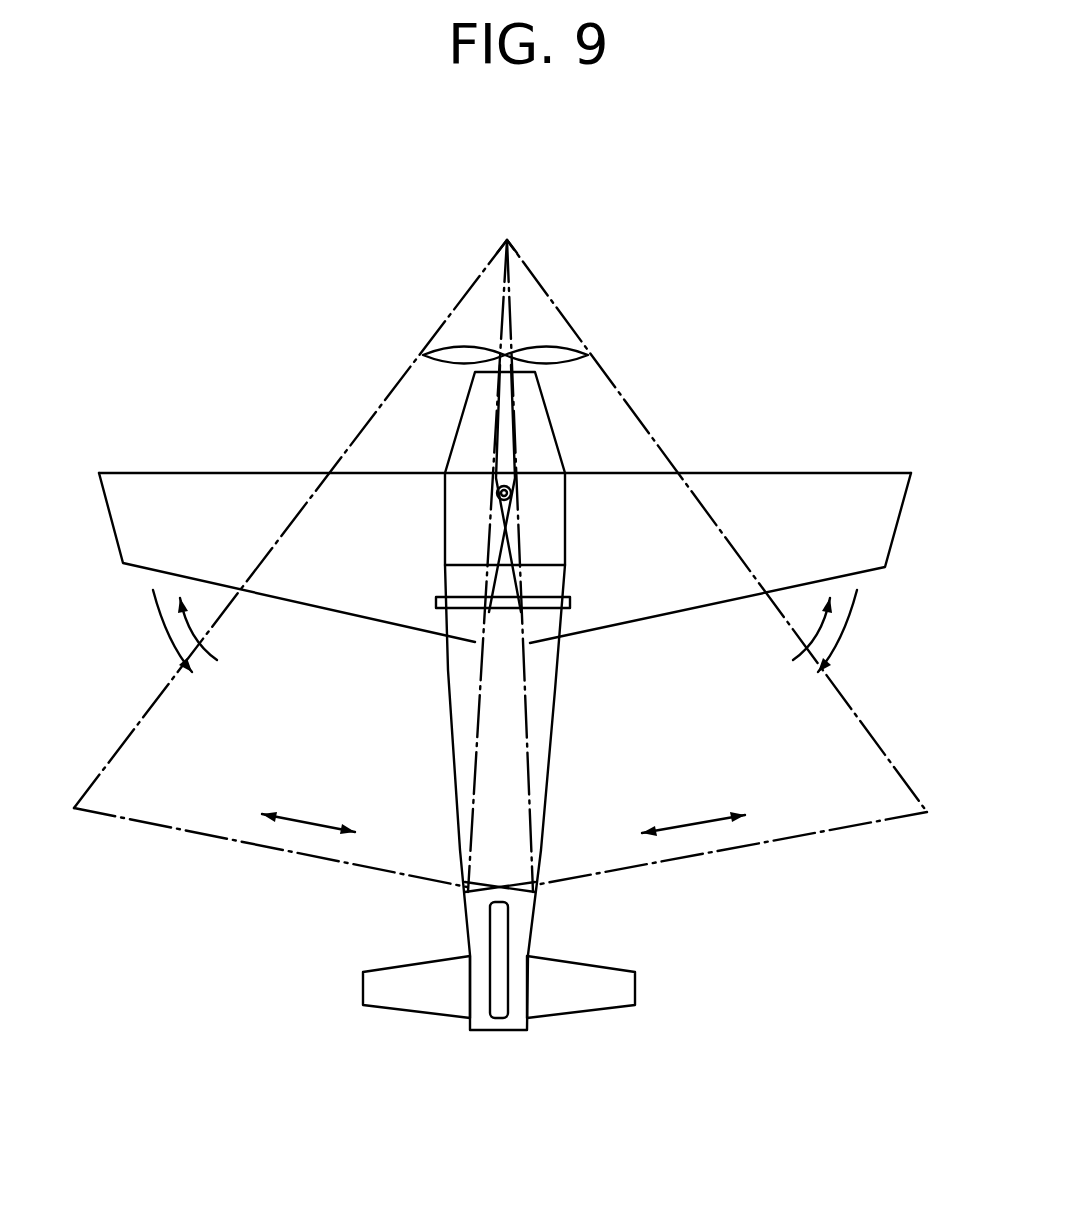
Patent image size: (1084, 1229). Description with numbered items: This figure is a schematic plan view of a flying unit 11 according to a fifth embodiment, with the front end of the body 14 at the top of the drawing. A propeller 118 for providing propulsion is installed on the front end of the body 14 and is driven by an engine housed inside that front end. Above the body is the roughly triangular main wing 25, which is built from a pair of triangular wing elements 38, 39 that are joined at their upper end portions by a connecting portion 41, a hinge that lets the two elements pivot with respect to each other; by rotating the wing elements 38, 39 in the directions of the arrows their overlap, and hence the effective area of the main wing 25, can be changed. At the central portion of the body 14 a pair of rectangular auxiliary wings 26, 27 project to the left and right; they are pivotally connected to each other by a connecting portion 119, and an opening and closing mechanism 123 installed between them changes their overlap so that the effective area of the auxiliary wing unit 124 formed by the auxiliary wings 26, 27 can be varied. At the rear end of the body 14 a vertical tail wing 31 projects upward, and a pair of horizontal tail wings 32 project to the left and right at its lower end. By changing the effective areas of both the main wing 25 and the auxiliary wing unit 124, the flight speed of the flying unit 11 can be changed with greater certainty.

The flying unit 11 is at (620, 368).
The body 14 is at (557, 690).
The main wing 25 is at (618, 430).
The auxiliary wing 26 is at (807, 500).
The auxiliary wing 27 is at (180, 495).
The vertical tail wing 31 is at (498, 1013).
The horizontal tail wing 32 is at (405, 995).
The wing element 38 is at (753, 830).
The wing element 39 is at (210, 815).
The connecting portion 41 is at (507, 240).
The propeller 118 is at (455, 345).
The connecting portion 119 is at (508, 486).
The opening and closing mechanism 123 is at (570, 600).
The auxiliary wing unit 124 is at (400, 470).